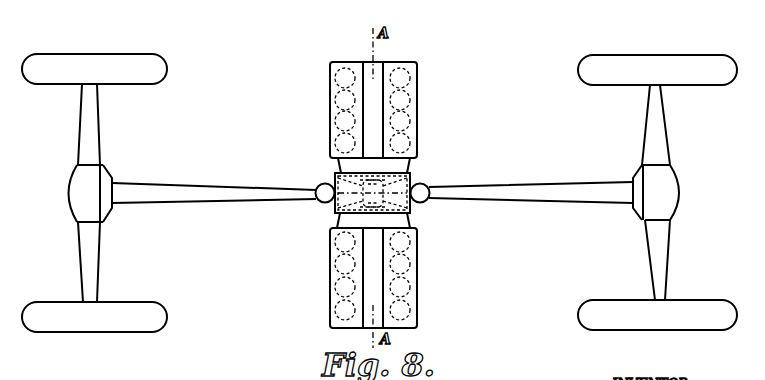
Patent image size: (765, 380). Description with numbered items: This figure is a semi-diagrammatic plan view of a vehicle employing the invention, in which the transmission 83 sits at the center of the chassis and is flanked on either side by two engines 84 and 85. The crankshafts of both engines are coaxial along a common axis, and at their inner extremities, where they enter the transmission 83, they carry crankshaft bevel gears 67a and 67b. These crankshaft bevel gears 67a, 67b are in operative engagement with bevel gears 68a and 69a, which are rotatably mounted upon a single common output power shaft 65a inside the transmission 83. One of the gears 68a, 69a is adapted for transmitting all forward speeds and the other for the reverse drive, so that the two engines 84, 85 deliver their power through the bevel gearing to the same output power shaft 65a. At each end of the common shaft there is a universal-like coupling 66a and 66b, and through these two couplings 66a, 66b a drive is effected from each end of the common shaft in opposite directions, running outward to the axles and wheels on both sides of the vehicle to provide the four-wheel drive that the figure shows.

The engine 84 is at (415, 103).
The engine 85 is at (413, 273).
The transmission 83 is at (410, 174).
The universal-like coupling 66a is at (430, 190).
The universal-like coupling 66b is at (330, 200).
The crankshaft bevel gear 67a is at (337, 175).
The crankshaft bevel gear 67b is at (411, 213).
The bevel gear 69a is at (336, 177).
The common output power shaft 65a is at (343, 204).
The bevel gear 68a is at (412, 208).